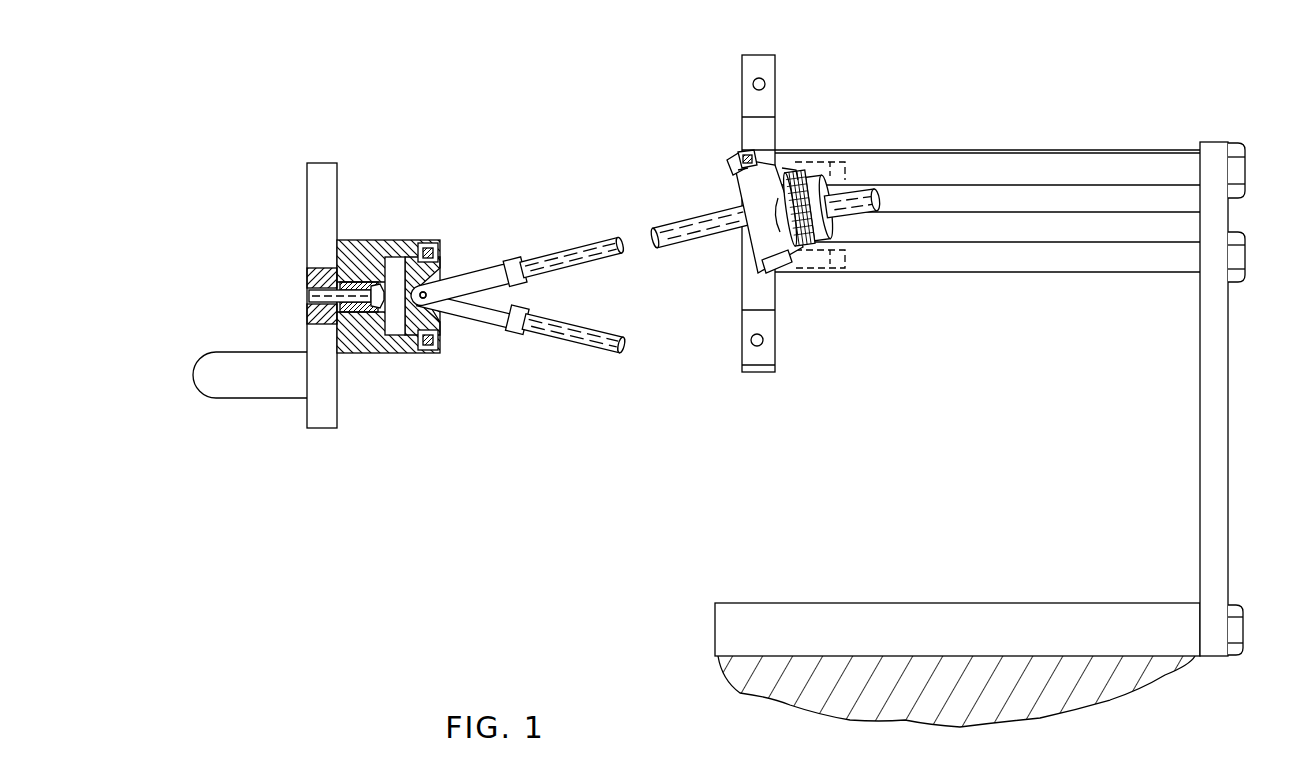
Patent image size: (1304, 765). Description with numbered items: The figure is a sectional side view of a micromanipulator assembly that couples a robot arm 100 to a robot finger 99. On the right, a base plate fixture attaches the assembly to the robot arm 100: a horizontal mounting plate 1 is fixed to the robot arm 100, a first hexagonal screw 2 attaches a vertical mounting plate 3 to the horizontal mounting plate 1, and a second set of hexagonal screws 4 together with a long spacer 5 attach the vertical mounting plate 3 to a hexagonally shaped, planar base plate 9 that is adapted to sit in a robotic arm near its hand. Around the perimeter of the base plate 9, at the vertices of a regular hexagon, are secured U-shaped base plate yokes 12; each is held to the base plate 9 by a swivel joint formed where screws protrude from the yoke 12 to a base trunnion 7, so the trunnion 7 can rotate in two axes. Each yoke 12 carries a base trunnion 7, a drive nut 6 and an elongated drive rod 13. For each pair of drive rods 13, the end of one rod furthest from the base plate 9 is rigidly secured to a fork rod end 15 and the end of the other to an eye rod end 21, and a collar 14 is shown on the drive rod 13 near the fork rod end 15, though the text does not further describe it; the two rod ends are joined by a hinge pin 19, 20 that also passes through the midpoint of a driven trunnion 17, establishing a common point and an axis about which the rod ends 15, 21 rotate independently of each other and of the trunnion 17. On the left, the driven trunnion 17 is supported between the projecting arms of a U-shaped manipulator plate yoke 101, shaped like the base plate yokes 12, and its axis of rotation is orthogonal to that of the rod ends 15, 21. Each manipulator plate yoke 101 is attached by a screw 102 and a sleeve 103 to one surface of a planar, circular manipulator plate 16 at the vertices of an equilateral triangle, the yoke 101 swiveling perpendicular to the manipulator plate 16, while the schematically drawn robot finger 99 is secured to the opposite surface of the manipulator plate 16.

The horizontal mounting plate 1 is at (1132, 602).
The first hexagonal screw 2 is at (1245, 633).
The vertical mounting plate 3 is at (1231, 414).
The second set of hexagonal screws 4 is at (1247, 258).
The long spacer 5 is at (1158, 150).
The drive nut 6 is at (827, 173).
The base trunnion 7 is at (794, 165).
The base plate 9 is at (771, 52).
The base plate yoke 12 is at (724, 157).
The drive rod 13 is at (591, 237).
The collar 14 is at (512, 246).
The fork rod end 15 is at (482, 263).
The manipulator plate 16 is at (304, 232).
The driven trunnion 17 is at (443, 313).
The hinge pin 19 is at (434, 296).
The pivot pin 20 is at (423, 295).
The eye rod end 21 is at (507, 298).
The robot finger 99 is at (270, 398).
The robot arm 100 is at (938, 700).
The manipulator plate yoke 101 is at (380, 238).
The screw 102 is at (306, 295).
The sleeve 103 is at (345, 272).